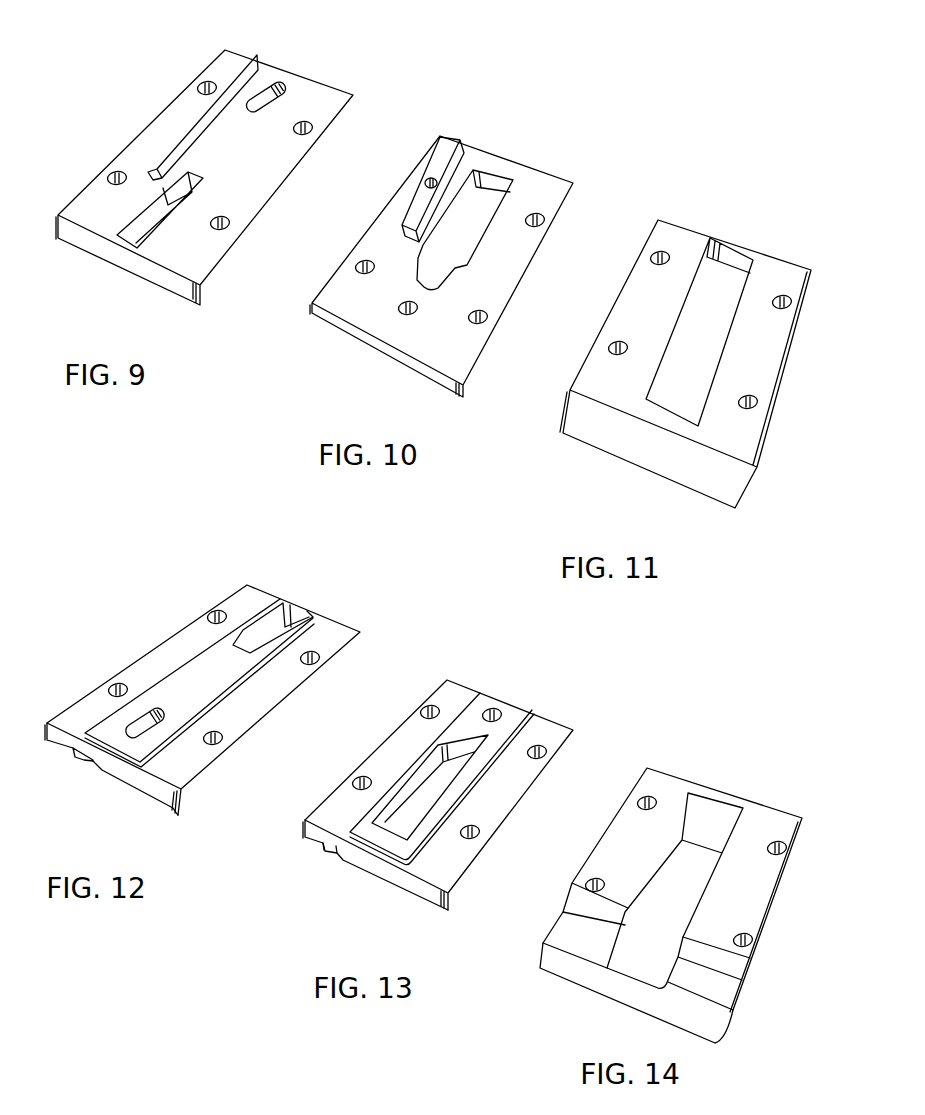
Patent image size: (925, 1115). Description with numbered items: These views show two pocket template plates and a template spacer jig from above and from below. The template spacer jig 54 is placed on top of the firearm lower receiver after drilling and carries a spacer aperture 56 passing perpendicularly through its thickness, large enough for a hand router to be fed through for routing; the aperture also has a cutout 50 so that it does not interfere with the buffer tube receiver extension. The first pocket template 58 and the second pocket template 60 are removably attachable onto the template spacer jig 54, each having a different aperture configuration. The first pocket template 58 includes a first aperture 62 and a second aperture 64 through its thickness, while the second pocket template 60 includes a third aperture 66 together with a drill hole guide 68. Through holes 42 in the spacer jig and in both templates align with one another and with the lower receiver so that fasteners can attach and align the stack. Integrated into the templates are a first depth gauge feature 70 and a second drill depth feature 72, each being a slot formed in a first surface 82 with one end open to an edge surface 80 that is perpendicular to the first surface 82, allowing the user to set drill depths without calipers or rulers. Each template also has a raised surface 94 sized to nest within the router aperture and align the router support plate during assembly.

In FIG. 9, the through holes 42 is at (203, 88).
In FIG. 10, the through holes 42 is at (429, 181).
In FIG. 11, the through holes 42 is at (660, 258).
In FIG. 12, the through holes 42 is at (217, 617).
In FIG. 13, the through holes 42 is at (430, 712).
In FIG. 14, the through holes 42 is at (647, 803).
In FIG. 14, the cutout 50 is at (727, 968).
In FIG. 11, the template spacer jig 54 is at (687, 235).
In FIG. 14, the template spacer jig 54 is at (768, 813).
In FIG. 11, the spacer aperture 56 is at (707, 335).
In FIG. 14, the spacer aperture 56 is at (687, 897).
In FIG. 9, the first pocket template 58 is at (307, 80).
In FIG. 12, the first pocket template 58 is at (332, 632).
In FIG. 10, the second pocket template 60 is at (543, 172).
In FIG. 13, the second pocket template 60 is at (547, 720).
In FIG. 9, the first aperture 62 is at (135, 228).
In FIG. 12, the first aperture 62 is at (273, 623).
In FIG. 9, the second aperture 64 is at (277, 82).
In FIG. 12, the second aperture 64 is at (127, 733).
In FIG. 10, the third aperture 66 is at (487, 197).
In FIG. 13, the third aperture 66 is at (447, 773).
In FIG. 10, the drill hole guide 68 is at (408, 308).
In FIG. 13, the drill hole guide 68 is at (497, 712).
In FIG. 9, the first depth gauge feature 70 is at (245, 74).
In FIG. 12, the first depth gauge feature 70 is at (93, 763).
In FIG. 10, the second drill depth feature 72 is at (467, 160).
In FIG. 13, the second drill depth feature 72 is at (338, 852).
In FIG. 12, the edge surface 80 is at (160, 800).
In FIG. 13, the edge surface 80 is at (408, 880).
In FIG. 9, the first surface 82 is at (273, 163).
In FIG. 10, the first surface 82 is at (440, 337).
In FIG. 12, the raised surface 94 is at (190, 663).
In FIG. 13, the raised surface 94 is at (383, 840).